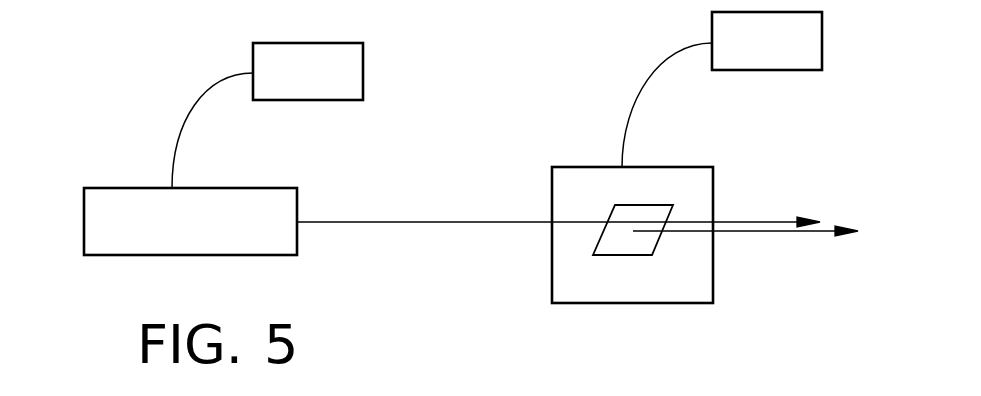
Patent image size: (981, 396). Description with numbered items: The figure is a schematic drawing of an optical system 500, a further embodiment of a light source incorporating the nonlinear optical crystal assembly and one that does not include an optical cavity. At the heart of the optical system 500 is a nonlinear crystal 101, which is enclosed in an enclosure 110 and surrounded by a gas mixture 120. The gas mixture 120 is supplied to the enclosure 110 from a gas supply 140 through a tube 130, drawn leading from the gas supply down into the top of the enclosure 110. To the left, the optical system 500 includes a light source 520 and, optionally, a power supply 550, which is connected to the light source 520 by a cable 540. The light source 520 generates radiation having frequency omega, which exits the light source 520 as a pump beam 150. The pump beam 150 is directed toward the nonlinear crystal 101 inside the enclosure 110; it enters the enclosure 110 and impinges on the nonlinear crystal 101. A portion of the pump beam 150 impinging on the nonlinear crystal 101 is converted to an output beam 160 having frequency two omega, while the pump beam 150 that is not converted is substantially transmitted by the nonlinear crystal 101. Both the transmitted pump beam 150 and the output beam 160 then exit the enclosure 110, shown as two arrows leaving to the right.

The optical system 500 is at (782, 313).
The light source 520 is at (199, 231).
The power supply 550 is at (325, 84).
The cable 540 is at (197, 105).
The pump beam 150 is at (432, 222).
The enclosure 110 is at (552, 258).
The gas mixture 120 is at (592, 202).
The nonlinear crystal 101 is at (657, 245).
The tube 130 is at (642, 87).
The gas supply 140 is at (783, 47).
The output beam 160 is at (780, 233).